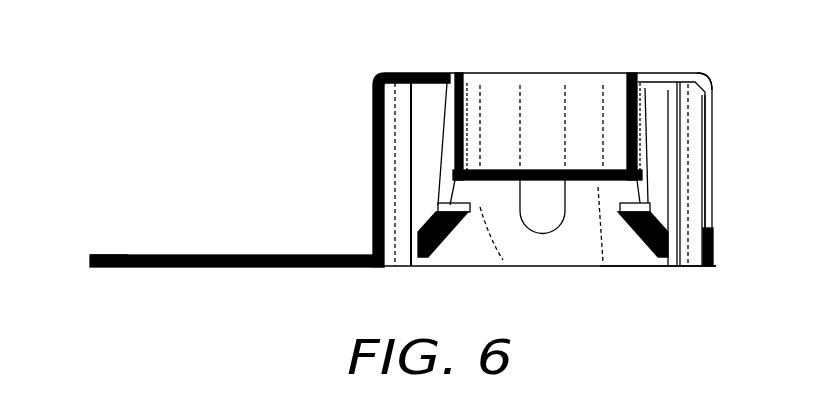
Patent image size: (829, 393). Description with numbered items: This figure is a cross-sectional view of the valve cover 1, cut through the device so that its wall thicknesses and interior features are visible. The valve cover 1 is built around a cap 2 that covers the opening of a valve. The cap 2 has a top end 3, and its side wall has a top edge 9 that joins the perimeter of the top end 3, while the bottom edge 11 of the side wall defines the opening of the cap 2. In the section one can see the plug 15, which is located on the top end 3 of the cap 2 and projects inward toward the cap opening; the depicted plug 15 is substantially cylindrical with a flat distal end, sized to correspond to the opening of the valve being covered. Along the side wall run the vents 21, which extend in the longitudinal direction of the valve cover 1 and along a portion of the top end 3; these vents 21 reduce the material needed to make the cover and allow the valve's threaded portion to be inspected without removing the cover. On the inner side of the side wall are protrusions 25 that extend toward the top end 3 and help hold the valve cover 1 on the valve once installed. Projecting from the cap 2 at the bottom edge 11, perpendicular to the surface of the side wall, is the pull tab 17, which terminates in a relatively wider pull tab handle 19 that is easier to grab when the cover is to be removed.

The valve cover 1 is at (121, 111).
The cap 2 is at (728, 128).
The top end 3 is at (632, 82).
The top edge 9 is at (708, 77).
The bottom edge 11 is at (688, 266).
The plug 15 is at (543, 92).
The pull tab 17 is at (202, 271).
The pull tab handle 19 is at (128, 255).
The vents 21 is at (706, 133).
The protrusions 25 is at (455, 210).